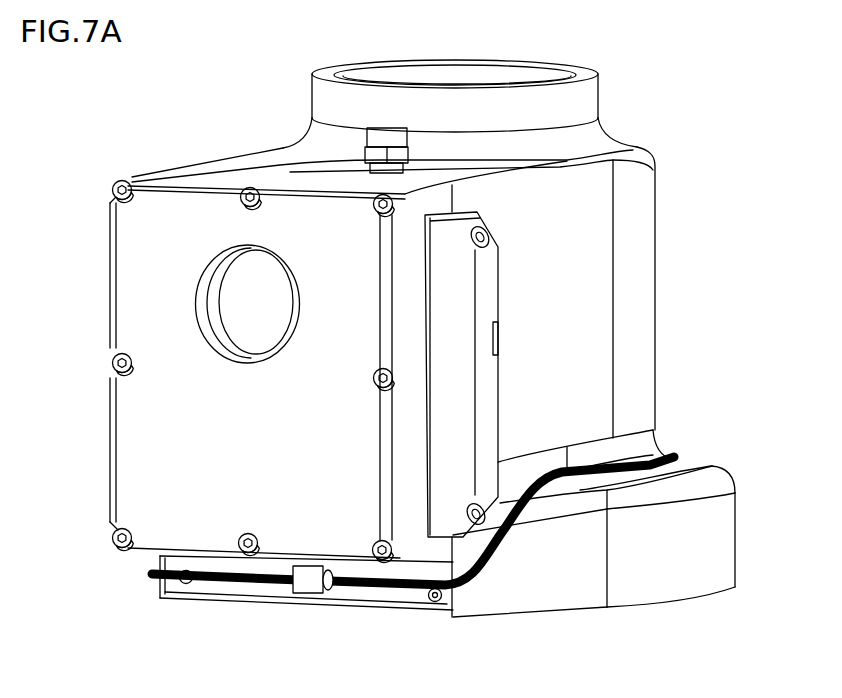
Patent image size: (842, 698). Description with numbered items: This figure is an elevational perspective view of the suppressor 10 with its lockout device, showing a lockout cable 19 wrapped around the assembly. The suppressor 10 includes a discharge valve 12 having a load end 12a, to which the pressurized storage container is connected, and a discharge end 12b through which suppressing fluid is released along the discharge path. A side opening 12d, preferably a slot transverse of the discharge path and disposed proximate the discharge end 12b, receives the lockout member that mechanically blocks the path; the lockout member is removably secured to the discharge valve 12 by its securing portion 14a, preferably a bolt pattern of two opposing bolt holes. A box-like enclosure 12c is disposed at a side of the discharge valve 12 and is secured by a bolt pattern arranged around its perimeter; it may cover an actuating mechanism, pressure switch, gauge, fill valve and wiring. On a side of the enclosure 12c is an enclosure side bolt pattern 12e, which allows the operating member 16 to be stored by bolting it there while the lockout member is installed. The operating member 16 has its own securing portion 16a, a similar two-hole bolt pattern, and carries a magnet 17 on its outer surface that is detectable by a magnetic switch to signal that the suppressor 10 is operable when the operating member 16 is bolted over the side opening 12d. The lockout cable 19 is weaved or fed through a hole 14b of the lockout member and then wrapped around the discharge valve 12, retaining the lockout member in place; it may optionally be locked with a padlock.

The suppressor 10 is at (678, 73).
The discharge valve 12 is at (656, 286).
The load end 12a is at (482, 65).
The discharge end 12b is at (524, 612).
The enclosure 12c is at (110, 263).
The side opening 12d is at (360, 598).
The enclosure side bolt pattern 12e is at (435, 447).
The securing portion 14a is at (160, 582).
The hole 14b is at (303, 596).
The operating member 16 is at (498, 263).
The securing portion 16a is at (493, 234).
The magnet 17 is at (500, 336).
The lockout cable 19 is at (676, 463).